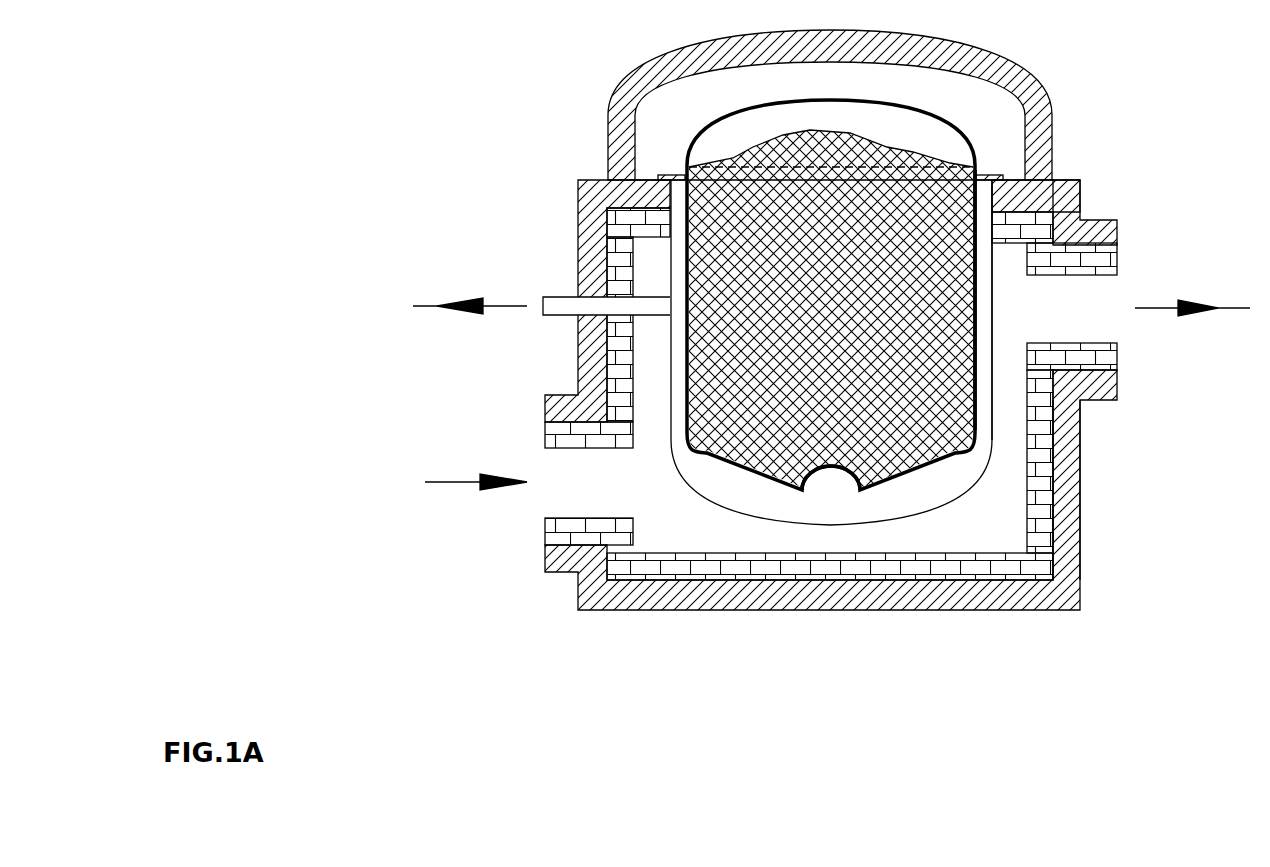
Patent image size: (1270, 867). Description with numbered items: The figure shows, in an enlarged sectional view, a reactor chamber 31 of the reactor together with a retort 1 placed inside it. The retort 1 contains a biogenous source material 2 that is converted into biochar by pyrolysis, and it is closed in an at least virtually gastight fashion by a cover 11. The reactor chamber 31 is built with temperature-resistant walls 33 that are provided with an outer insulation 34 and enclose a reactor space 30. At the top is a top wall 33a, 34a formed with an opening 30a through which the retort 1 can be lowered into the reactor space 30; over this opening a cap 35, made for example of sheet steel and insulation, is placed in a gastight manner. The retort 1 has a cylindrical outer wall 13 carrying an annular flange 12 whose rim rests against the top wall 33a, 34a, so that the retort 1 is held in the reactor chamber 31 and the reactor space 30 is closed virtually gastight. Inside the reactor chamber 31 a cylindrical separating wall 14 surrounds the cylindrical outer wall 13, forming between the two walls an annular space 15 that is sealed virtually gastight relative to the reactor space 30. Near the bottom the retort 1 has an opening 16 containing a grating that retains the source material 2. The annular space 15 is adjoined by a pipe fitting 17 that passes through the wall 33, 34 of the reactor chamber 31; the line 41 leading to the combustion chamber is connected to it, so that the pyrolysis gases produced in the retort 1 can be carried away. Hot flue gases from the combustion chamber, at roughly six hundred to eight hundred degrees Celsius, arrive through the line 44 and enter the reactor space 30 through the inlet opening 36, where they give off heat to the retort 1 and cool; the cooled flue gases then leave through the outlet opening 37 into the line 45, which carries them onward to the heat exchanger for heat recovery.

The retort 1 is at (687, 198).
The biogenous source material 2 is at (846, 313).
The cover 11 is at (697, 130).
The annular flange 12 is at (672, 175).
The cylindrical outer wall 13 is at (975, 253).
The cylindrical separating wall 14 is at (990, 273).
The annular space 15 is at (982, 297).
The opening 16 is at (833, 488).
The pipe fitting 17 is at (553, 300).
The reactor space 30 is at (678, 537).
The opening 30a is at (980, 202).
The reactor chamber 31 is at (1055, 609).
The temperature-resistant wall 33 is at (1042, 460).
The top wall 33a is at (1012, 212).
The outer insulation 34 is at (1072, 490).
The top wall insulation 34a is at (1070, 202).
The cap 35 is at (1022, 73).
The inlet opening 36 is at (603, 485).
The outlet opening 37 is at (1083, 312).
The line 41 is at (428, 306).
The line 44 is at (441, 482).
The line 45 is at (1232, 308).